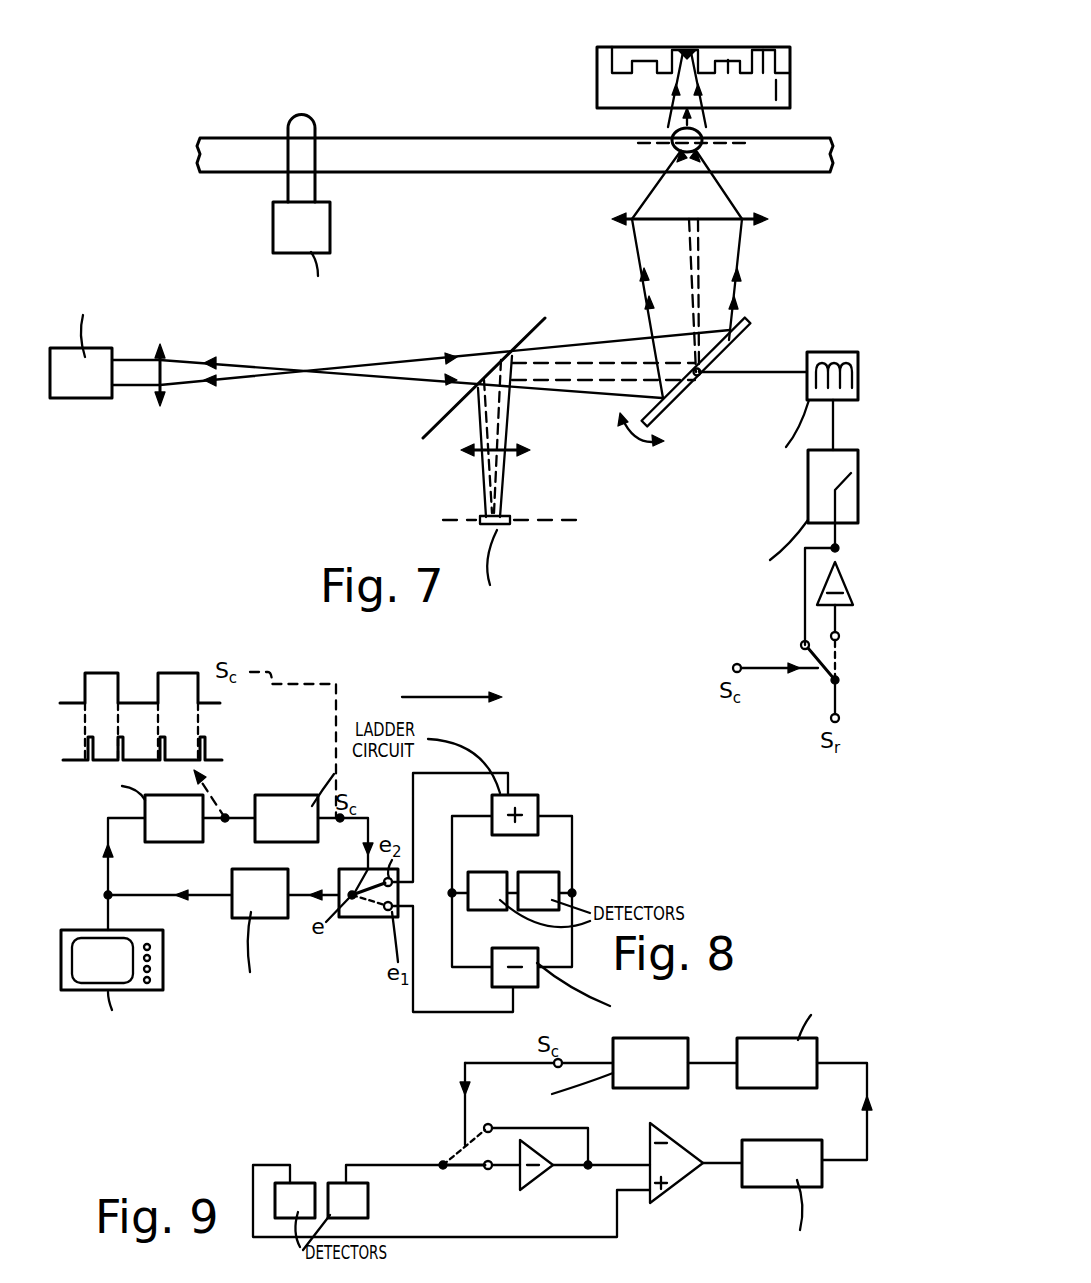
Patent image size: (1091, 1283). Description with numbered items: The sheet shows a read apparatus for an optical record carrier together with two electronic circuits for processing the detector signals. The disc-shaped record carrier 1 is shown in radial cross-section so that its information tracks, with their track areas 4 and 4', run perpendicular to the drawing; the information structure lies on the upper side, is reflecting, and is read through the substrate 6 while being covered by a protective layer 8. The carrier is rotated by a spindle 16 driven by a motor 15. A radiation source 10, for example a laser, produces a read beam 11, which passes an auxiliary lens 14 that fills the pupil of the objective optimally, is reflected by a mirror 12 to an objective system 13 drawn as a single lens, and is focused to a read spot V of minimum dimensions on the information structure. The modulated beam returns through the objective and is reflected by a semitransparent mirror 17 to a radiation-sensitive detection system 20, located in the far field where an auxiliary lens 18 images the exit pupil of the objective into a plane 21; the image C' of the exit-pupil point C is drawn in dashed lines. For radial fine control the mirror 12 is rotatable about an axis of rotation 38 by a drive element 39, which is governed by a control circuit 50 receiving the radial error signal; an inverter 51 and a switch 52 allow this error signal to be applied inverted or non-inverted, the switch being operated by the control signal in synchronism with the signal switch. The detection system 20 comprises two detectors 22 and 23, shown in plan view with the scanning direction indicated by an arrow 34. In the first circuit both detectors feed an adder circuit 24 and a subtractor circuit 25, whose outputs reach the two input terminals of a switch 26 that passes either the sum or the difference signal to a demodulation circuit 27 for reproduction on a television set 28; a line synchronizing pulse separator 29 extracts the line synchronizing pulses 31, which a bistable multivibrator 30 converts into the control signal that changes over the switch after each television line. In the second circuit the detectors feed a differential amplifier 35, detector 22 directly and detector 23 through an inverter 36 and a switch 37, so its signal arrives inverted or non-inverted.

In FIG. 7, the conveyor belt 1 is at (488, 134).
In FIG. 7, the projection of workpiece 4 is at (771, 92).
In FIG. 7, the projection of workpiece 4' is at (737, 97).
In FIG. 7, the substrate 6 is at (780, 90).
In FIG. 7, the protective layer 8 is at (784, 52).
In FIG. 7, the read spot V is at (688, 48).
In FIG. 7, the radiation source 10 is at (88, 402).
In FIG. 7, the read beam 11 is at (214, 383).
In FIG. 7, the mirror 12 is at (749, 322).
In FIG. 7, the objective system 13 is at (716, 221).
In FIG. 7, the auxiliary lens 14 is at (163, 378).
In FIG. 7, the motor 15 is at (315, 226).
In FIG. 7, the spindle 16 is at (304, 134).
In FIG. 7, the semitransparent mirror 17 is at (528, 336).
In FIG. 7, the auxiliary lens 18 is at (514, 441).
In FIG. 7, the detection system 20 is at (503, 526).
In FIG. 7, the plane 21 is at (580, 523).
In FIG. 7, the point of the exit pupil C is at (743, 249).
In FIG. 7, the image of the point C C' is at (527, 496).
In FIG. 8, the detector 22 is at (500, 871).
In FIG. 9, the detector 22 is at (305, 1183).
In FIG. 8, the detector 23 is at (532, 871).
In FIG. 9, the detector 23 is at (368, 1201).
In FIG. 8, the adder circuit 24 is at (540, 809).
In FIG. 8, the subtractor circuit 25 is at (545, 975).
In FIG. 8, the switch 26 is at (368, 918).
In FIG. 8, the demodulation circuit 27 is at (258, 916).
In FIG. 9, the demodulation circuit 27 is at (797, 1180).
In FIG. 8, the television set 28 is at (165, 960).
In FIG. 8, the line synchronizing pulse separator 29 is at (176, 843).
In FIG. 9, the line synchronizing pulse separator 29 is at (666, 1090).
In FIG. 8, the bistable multivibrator 30 is at (298, 843).
In FIG. 9, the bistable multivibrator 30 is at (796, 1090).
In FIG. 8, the line synchronizing pulses 31 is at (206, 747).
In FIG. 8, the arrow 34 is at (464, 698).
In FIG. 9, the differential amplifier 35 is at (676, 1178).
In FIG. 9, the inverter 36 is at (538, 1180).
In FIG. 9, the switch 37 is at (458, 1152).
In FIG. 7, the axis of rotation 38 is at (697, 378).
In FIG. 7, the drive element 39 is at (806, 384).
In FIG. 7, the control circuit 50 is at (808, 500).
In FIG. 7, the inverter 51 is at (821, 594).
In FIG. 7, the switch 52 is at (830, 678).